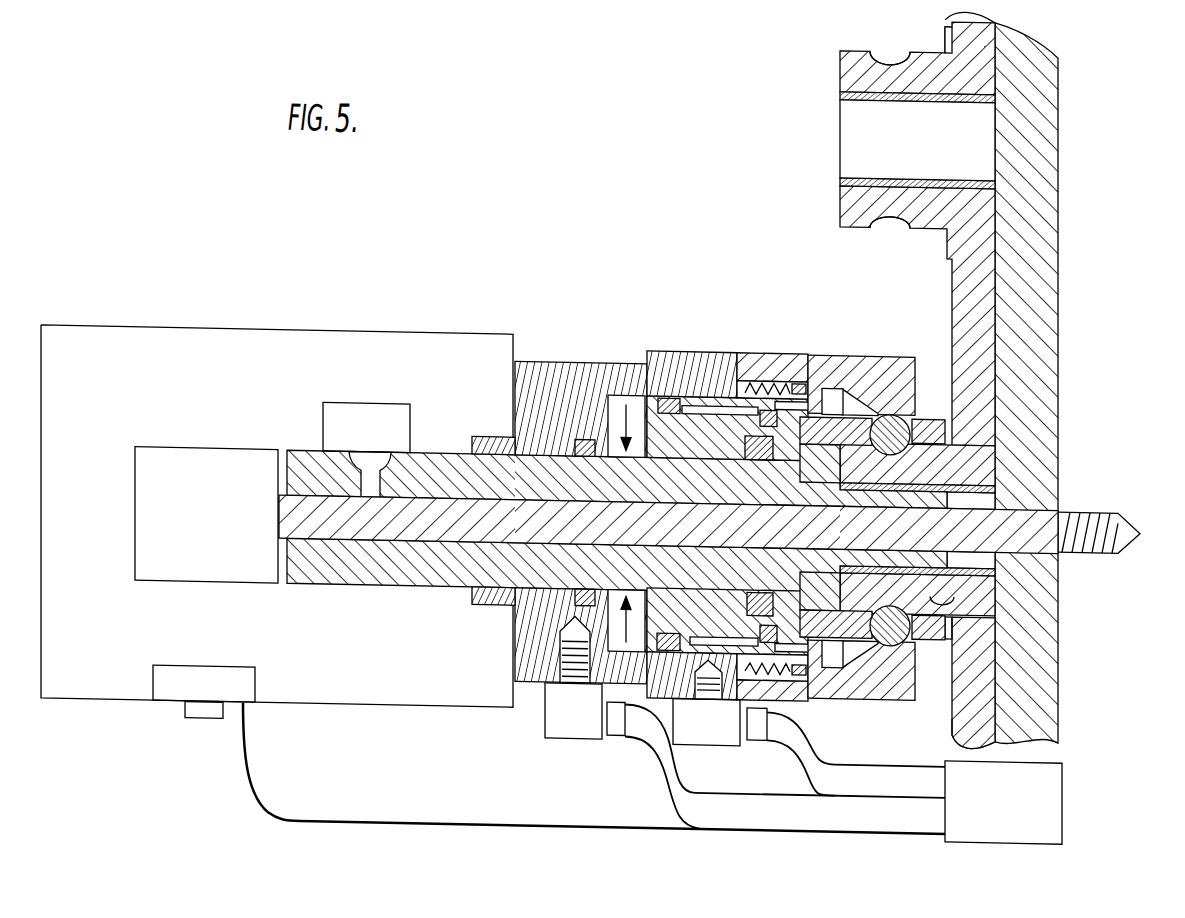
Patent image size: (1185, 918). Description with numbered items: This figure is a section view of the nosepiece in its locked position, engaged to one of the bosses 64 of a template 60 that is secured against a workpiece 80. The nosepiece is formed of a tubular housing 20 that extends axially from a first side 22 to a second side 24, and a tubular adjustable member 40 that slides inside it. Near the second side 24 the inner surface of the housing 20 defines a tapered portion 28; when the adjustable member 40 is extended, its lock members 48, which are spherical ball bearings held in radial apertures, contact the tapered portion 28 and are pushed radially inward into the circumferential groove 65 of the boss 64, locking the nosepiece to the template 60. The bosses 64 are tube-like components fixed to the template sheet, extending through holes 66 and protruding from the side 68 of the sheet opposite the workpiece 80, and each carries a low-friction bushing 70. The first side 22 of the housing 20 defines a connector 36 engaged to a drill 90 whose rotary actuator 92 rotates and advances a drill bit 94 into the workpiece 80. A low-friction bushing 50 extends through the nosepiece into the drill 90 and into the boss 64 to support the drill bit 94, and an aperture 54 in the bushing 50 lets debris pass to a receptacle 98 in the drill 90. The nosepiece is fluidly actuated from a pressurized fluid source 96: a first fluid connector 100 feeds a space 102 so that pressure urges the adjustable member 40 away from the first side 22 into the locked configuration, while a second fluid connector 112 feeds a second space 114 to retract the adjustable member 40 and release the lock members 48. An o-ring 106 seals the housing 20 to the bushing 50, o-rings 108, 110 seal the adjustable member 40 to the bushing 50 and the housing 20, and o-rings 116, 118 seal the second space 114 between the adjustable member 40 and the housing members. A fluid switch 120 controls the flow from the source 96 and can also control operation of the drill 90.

The tubular housing 20 is at (568, 389).
The first side 22 is at (545, 409).
The second side 24 is at (912, 360).
The tapered portion 28 is at (862, 339).
The connector 36 is at (477, 426).
The tubular adjustable member 40 is at (703, 414).
The lock members 48 is at (882, 397).
The bushing 50 is at (565, 351).
The aperture 54 is at (315, 444).
The template 60 is at (1060, 28).
The bosses 64 is at (840, 36).
The circumferential groove 65 is at (890, 45).
The holes 66 is at (848, 120).
The side 68 is at (942, 718).
The bushing 70 is at (840, 82).
The workpiece 80 is at (1113, 170).
The drill 90 is at (337, 324).
The rotary actuator 92 is at (153, 444).
The drill bit 94 is at (1128, 522).
The pressurized fluid source 96 is at (1062, 768).
The receptacle 98 is at (377, 396).
The first fluid connector 100 is at (565, 728).
The space 102 is at (628, 382).
The o-ring 106 is at (587, 426).
The o-ring 108 is at (748, 420).
The o-ring 110 is at (668, 385).
The second fluid connector 112 is at (703, 732).
The second space 114 is at (722, 378).
The o-ring 116 is at (768, 395).
The o-ring 118 is at (797, 366).
The fluid switch 120 is at (153, 672).